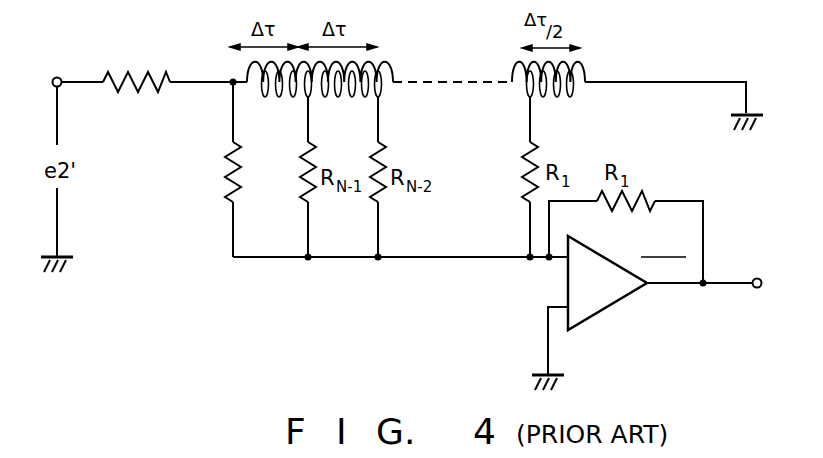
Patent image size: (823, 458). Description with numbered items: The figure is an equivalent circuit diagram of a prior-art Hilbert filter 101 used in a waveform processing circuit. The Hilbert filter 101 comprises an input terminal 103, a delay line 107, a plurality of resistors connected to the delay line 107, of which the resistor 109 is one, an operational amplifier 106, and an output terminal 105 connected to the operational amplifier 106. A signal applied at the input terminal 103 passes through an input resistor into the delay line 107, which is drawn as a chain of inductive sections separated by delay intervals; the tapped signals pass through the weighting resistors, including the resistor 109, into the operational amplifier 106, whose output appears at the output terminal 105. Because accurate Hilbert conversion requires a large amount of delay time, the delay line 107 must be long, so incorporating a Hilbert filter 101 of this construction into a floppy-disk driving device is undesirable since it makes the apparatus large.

The Hilbert filter 101 is at (142, 71).
The input terminal 103 is at (57, 77).
The output terminal 105 is at (757, 277).
The operational amplifier 106 is at (627, 281).
The delay line 107 is at (589, 68).
The resistor 109 is at (225, 178).